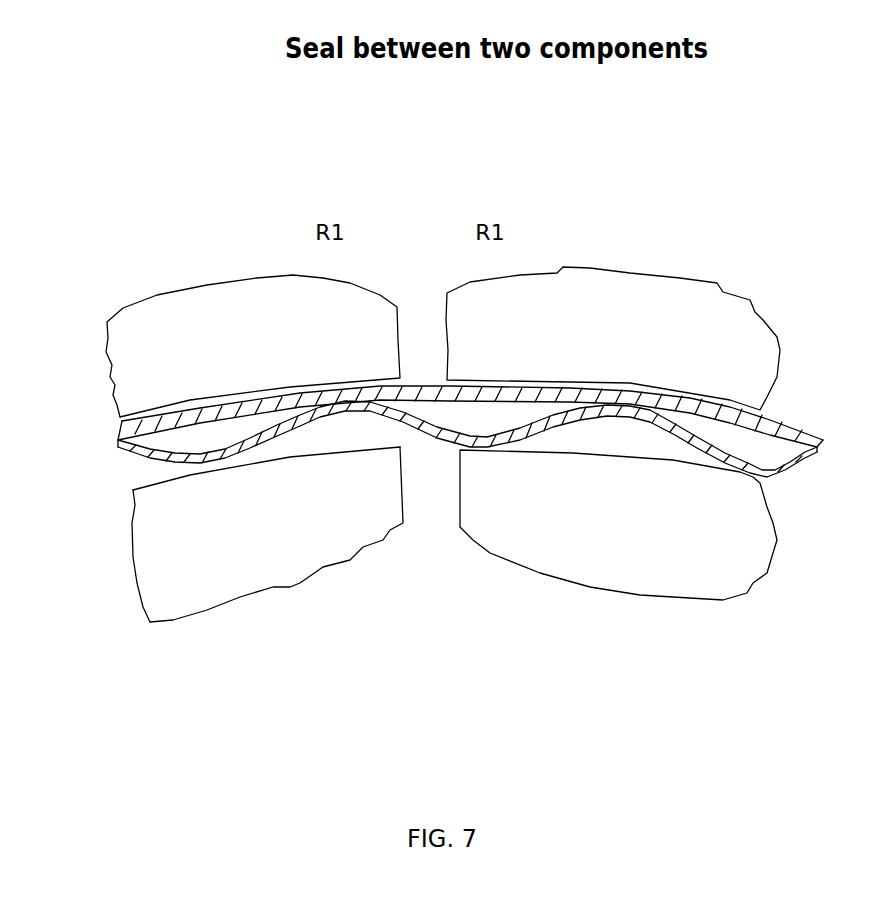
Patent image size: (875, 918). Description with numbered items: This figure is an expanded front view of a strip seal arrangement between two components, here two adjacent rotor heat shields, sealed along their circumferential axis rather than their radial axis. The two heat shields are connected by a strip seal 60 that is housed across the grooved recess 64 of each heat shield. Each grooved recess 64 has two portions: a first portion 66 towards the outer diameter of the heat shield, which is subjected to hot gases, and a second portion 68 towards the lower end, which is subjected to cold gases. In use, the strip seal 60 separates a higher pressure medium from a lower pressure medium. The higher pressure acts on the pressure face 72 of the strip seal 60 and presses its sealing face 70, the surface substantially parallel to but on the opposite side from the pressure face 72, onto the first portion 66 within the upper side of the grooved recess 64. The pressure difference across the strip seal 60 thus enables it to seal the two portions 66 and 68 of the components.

The strip seal 60 is at (450, 442).
The grooved recess 64 is at (112, 490).
The first portion 66 is at (216, 346).
The second portion 68 is at (425, 566).
The sealing face 70 is at (774, 419).
The pressure face 72 is at (770, 474).